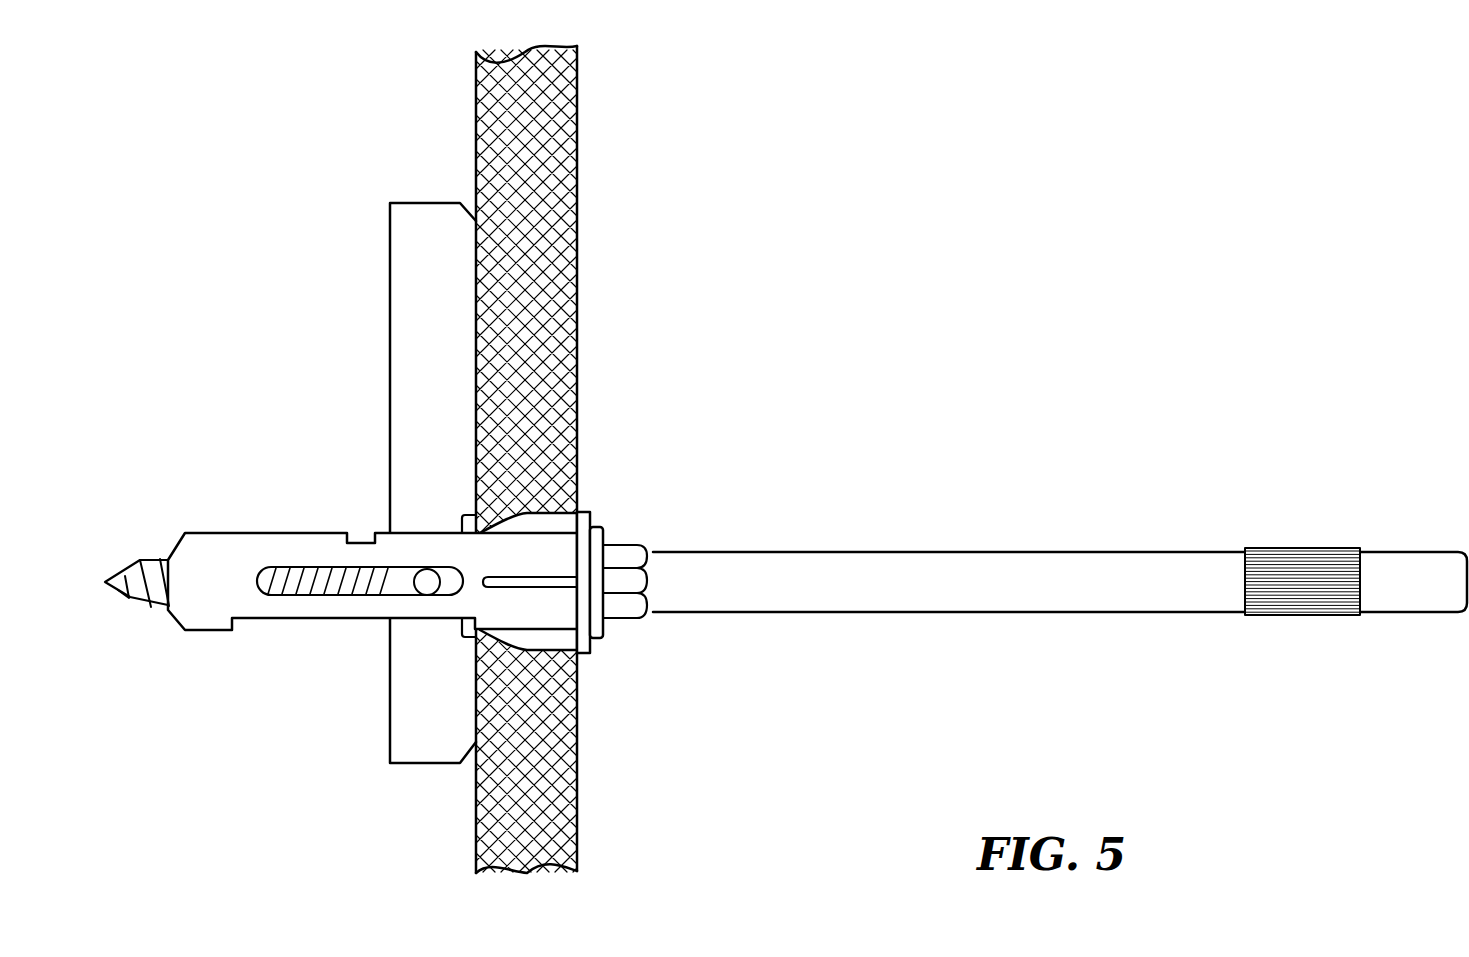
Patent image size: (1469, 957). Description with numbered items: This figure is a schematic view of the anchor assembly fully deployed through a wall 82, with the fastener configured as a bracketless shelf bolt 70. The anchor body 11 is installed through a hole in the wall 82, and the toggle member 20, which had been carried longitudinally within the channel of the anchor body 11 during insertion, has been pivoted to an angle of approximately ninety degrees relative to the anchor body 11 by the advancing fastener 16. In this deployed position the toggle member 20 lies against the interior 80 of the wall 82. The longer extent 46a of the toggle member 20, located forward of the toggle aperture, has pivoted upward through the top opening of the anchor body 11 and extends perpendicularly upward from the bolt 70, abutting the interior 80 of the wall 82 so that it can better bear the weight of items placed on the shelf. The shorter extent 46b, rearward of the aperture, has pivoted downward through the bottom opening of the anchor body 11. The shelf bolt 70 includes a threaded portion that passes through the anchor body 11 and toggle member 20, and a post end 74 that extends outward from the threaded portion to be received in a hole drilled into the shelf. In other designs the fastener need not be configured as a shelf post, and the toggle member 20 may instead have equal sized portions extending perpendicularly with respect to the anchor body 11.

The interior of wall 80 is at (476, 117).
The wall 82 is at (545, 136).
The toggle member 20 is at (370, 497).
The longer extent 46a is at (412, 265).
The shorter extent 46b is at (417, 732).
The anchor body 11 is at (220, 533).
The fastener 16 is at (116, 570).
The bracketless shelf bolt 70 is at (1060, 572).
The post end 74 is at (978, 597).